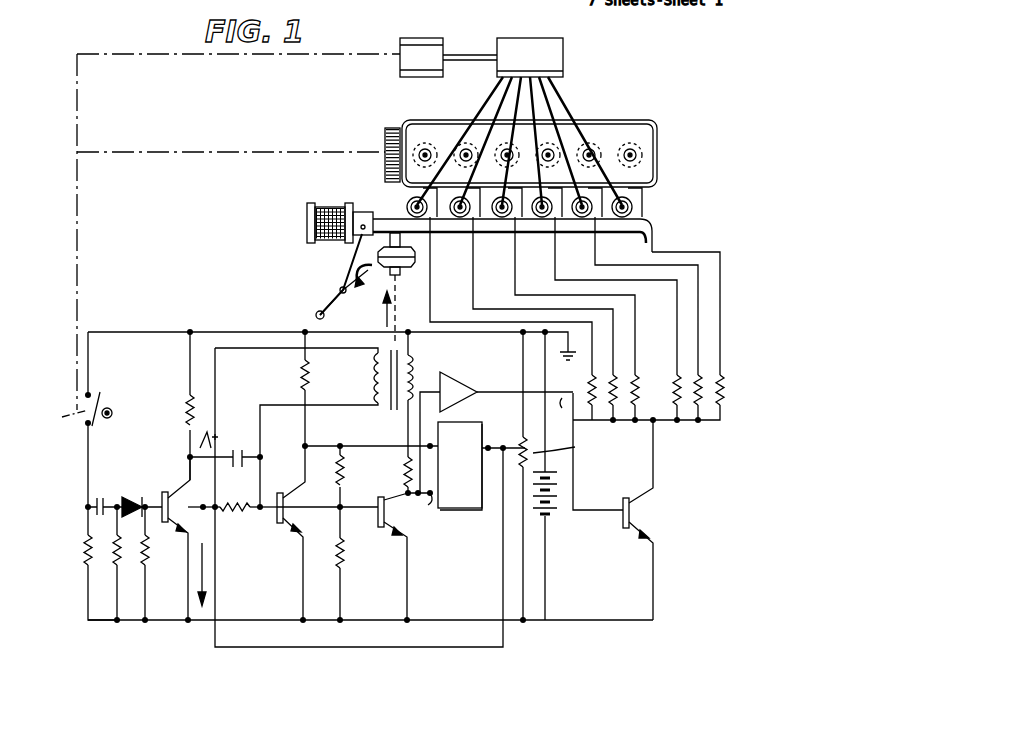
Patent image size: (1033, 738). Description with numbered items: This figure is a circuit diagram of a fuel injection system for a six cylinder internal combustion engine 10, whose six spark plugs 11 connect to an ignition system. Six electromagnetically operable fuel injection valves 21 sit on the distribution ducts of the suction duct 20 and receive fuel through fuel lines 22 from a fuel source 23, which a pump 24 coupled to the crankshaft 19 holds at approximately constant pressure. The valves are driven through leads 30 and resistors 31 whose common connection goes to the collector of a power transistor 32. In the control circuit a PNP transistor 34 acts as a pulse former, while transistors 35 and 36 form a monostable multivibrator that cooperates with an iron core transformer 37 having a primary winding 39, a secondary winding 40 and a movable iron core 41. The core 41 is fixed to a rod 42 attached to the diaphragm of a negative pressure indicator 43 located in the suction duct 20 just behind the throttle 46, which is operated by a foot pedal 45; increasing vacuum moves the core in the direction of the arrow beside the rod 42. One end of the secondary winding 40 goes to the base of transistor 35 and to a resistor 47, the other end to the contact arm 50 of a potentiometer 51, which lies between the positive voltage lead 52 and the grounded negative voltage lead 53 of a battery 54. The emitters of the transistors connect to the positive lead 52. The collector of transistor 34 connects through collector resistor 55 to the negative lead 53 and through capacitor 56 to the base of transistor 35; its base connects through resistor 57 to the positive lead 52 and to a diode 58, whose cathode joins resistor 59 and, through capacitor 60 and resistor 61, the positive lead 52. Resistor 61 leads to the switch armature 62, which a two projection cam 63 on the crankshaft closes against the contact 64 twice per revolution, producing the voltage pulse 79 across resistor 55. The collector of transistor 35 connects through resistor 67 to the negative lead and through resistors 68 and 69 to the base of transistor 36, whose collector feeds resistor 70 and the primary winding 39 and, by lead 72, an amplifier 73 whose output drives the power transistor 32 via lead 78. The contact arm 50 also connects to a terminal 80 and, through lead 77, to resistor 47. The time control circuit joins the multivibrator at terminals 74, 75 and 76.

The internal combustion engine 10 is at (650, 124).
The spark plugs 11 is at (466, 150).
The crankshaft 19 is at (280, 151).
The suction duct 20 is at (529, 235).
The fuel injection valves 21 is at (432, 221).
The fuel lines 22 is at (555, 99).
The fuel source 23 is at (563, 52).
The pump 24 is at (400, 75).
The leads 30 is at (717, 318).
The resistors 31 is at (694, 378).
The power transistor 32 is at (635, 534).
The transistor 34 is at (170, 487).
The transistor 35 is at (282, 537).
The transistor 36 is at (374, 530).
The iron core transformer 37 is at (382, 345).
The primary winding 39 is at (410, 362).
The secondary winding 40 is at (296, 427).
The iron core 41 is at (392, 410).
The rod 42 is at (398, 318).
The negative pressure indicator 43 is at (415, 267).
The foot pedal 45 is at (332, 303).
The throttle 46 is at (357, 210).
The resistor 47 is at (230, 510).
The contact arm 50 is at (523, 434).
The potentiometer 51 is at (567, 451).
The positive voltage lead 52 is at (460, 620).
The negative voltage lead 53 is at (258, 332).
The battery 54 is at (553, 519).
The collector resistor 55 is at (186, 398).
The capacitor 56 is at (238, 467).
The resistor 57 is at (148, 558).
The diode 58 is at (134, 497).
The resistor 59 is at (114, 568).
The capacitor 60 is at (96, 502).
The resistor 61 is at (86, 558).
The switch armature 62 is at (63, 416).
The cam 63 is at (121, 415).
The contact 64 is at (90, 394).
The resistor 67 is at (300, 384).
The resistor 68 is at (336, 504).
The resistor 69 is at (344, 566).
The resistor 70 is at (404, 476).
The lead 72 is at (444, 374).
The amplifier 73 is at (477, 391).
The terminal 74 is at (426, 446).
The terminal 75 is at (427, 514).
The terminal 76 is at (488, 451).
The lead 77 is at (360, 647).
The lead 78 is at (561, 415).
The voltage pulse 79 is at (210, 434).
The terminal 80 is at (196, 508).